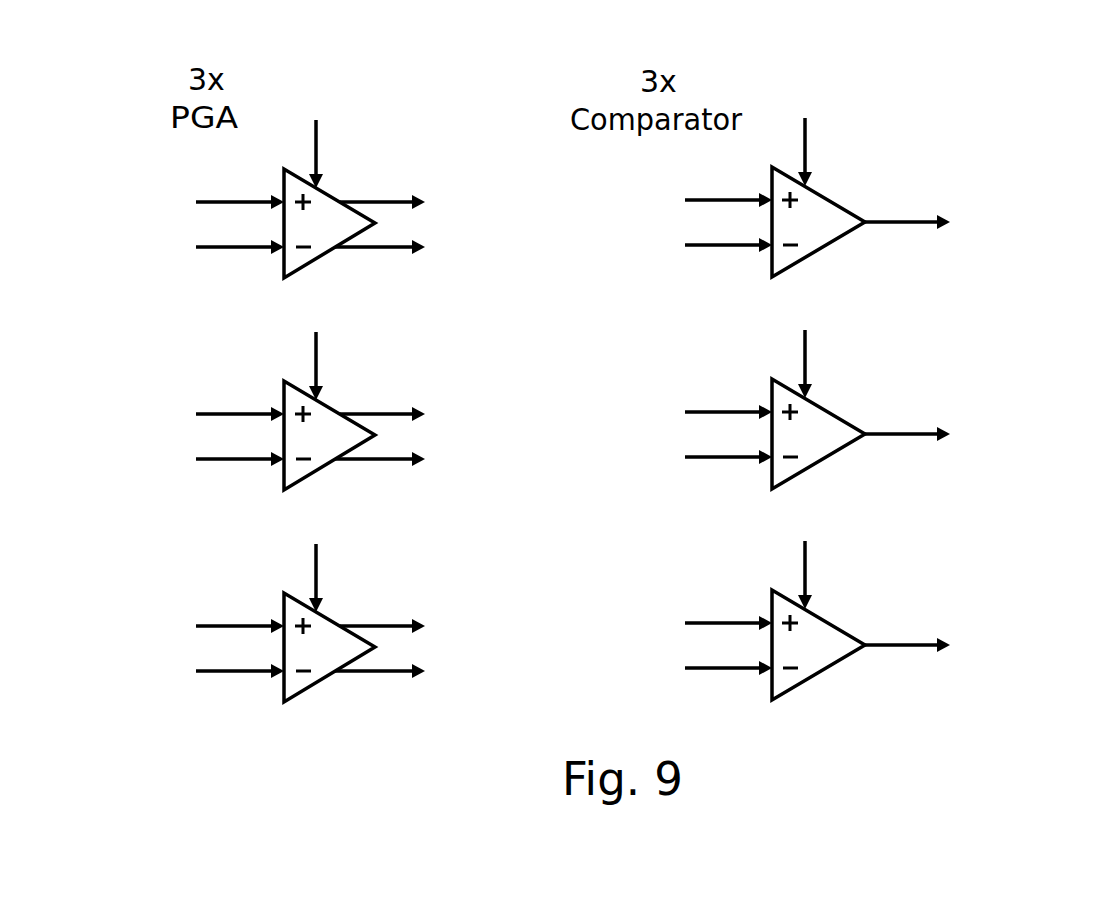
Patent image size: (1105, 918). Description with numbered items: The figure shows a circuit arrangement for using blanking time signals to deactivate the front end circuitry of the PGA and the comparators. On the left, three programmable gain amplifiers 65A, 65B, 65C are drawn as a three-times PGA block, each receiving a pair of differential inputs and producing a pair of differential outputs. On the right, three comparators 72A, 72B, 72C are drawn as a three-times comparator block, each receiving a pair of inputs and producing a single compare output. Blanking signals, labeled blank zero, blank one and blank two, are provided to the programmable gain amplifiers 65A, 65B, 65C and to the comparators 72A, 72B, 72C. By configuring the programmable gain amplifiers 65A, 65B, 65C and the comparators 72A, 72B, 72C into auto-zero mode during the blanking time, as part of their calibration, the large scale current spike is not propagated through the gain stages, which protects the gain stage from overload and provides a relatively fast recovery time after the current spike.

The programmable gain amplifier 65A is at (313, 261).
The programmable gain amplifier 65B is at (313, 473).
The programmable gain amplifier 65C is at (313, 685).
The comparator 72A is at (800, 260).
The comparator 72B is at (800, 472).
The comparator 72C is at (800, 683).